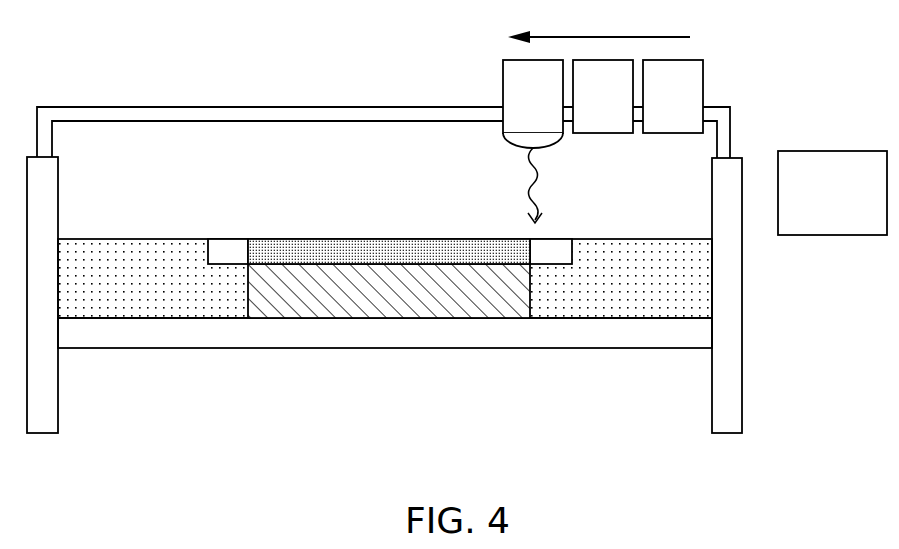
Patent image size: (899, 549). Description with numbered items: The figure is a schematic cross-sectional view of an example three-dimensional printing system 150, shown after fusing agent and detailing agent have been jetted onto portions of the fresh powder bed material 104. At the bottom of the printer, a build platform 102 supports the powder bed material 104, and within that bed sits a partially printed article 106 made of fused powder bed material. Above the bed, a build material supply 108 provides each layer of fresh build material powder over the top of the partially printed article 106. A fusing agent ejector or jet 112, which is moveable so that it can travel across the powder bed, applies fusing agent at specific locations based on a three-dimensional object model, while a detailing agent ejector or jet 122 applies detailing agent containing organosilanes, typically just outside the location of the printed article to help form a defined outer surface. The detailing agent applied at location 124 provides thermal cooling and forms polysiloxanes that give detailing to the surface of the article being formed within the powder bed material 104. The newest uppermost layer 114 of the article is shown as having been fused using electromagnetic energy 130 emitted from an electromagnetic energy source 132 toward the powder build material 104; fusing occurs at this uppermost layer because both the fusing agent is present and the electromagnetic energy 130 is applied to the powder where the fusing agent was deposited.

The 3D printing system 150 is at (124, 56).
The build platform 102 is at (549, 330).
The powder bed material 104 is at (185, 297).
The partially printed article 106 is at (313, 305).
The uppermost layer 114 is at (298, 247).
The location 124 is at (231, 247).
The electromagnetic energy source 132 is at (553, 106).
The detailing agent ejector 122 is at (623, 106).
The fusing agent ejector 112 is at (693, 106).
The build material supply 108 is at (852, 203).
The electromagnetic energy 130 is at (508, 172).